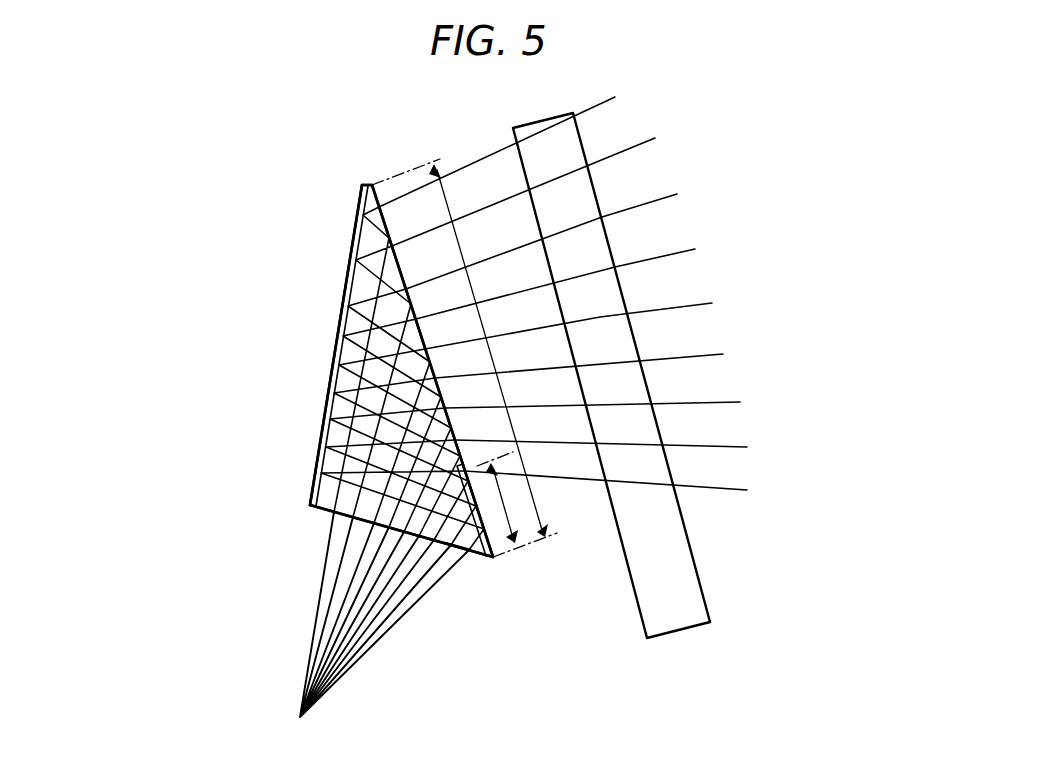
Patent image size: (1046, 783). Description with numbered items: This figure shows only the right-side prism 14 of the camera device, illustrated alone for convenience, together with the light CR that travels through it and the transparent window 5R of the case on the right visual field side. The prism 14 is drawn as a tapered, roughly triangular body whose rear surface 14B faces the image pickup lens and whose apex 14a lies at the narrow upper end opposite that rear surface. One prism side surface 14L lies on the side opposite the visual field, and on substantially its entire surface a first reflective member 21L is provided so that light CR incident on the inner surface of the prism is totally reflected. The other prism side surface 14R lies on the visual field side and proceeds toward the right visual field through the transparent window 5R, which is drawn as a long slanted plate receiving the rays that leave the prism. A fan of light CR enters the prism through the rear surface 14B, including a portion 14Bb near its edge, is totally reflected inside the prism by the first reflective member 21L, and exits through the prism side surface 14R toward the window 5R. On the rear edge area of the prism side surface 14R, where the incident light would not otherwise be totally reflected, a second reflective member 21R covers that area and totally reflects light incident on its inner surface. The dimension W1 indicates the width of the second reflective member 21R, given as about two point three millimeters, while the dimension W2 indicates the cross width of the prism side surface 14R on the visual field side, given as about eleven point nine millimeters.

The prism 14 is at (322, 273).
The apex of prism 14a is at (367, 183).
The prism side surface 14L is at (339, 345).
The prism side surface 14R is at (397, 262).
The rear surface 14B is at (322, 510).
The bottom surface portion 14Bb is at (462, 549).
The first reflective member 21L is at (331, 383).
The second reflective member 21R is at (495, 549).
The transparent window 5R is at (682, 568).
The light CR is at (337, 560).
The width of the second reflective member W1 is at (506, 526).
The cross width of the prism side surface W2 is at (533, 498).